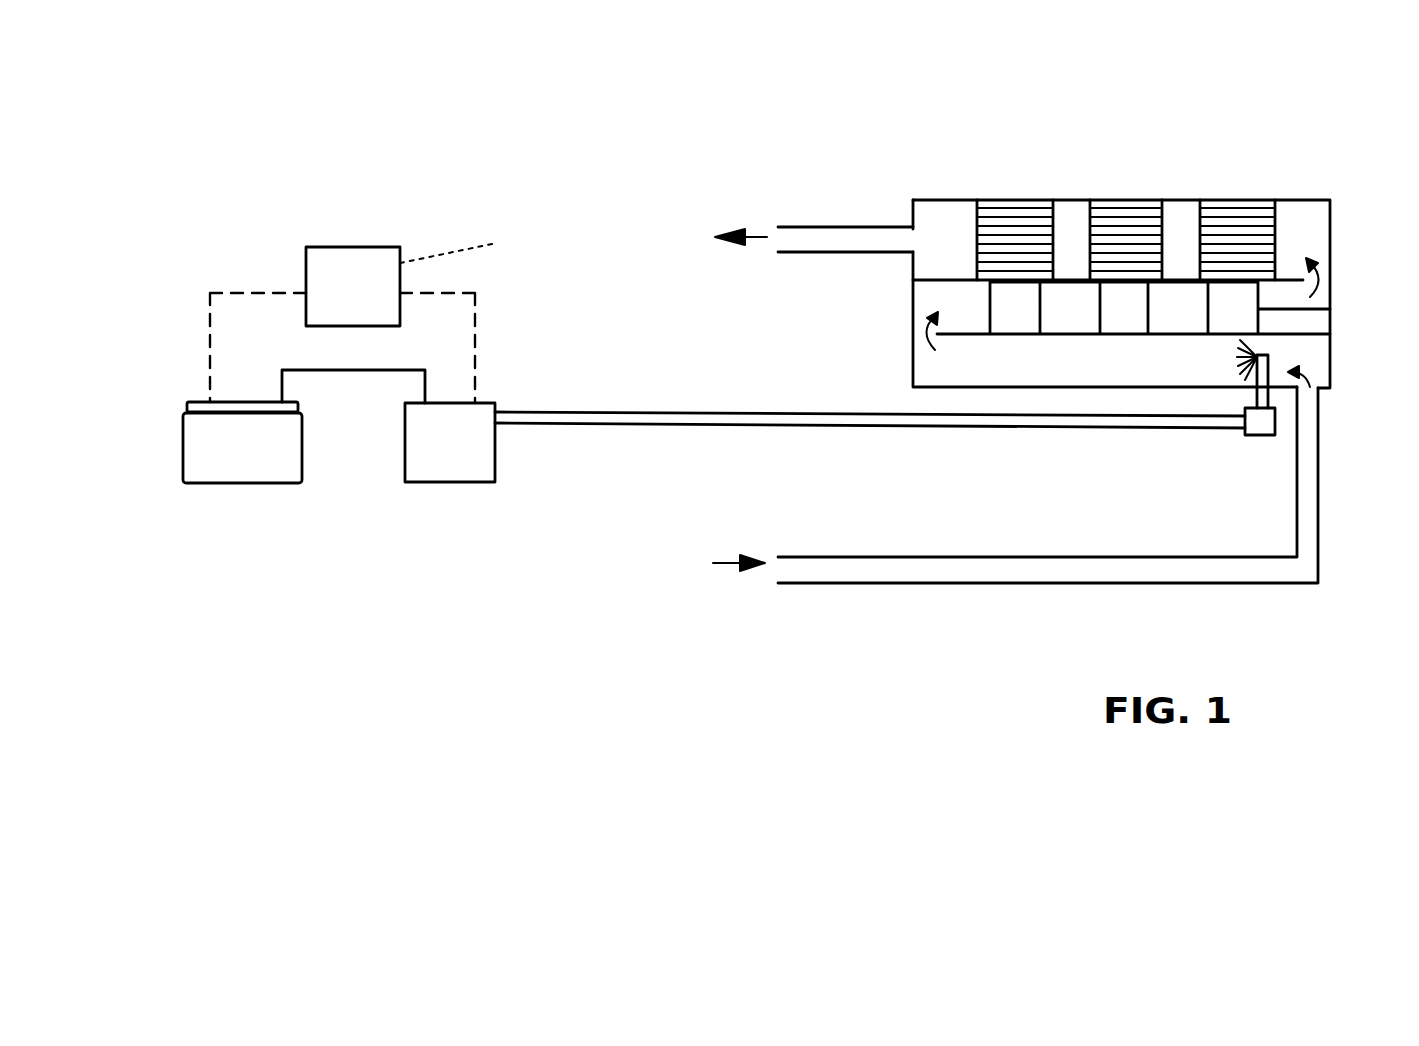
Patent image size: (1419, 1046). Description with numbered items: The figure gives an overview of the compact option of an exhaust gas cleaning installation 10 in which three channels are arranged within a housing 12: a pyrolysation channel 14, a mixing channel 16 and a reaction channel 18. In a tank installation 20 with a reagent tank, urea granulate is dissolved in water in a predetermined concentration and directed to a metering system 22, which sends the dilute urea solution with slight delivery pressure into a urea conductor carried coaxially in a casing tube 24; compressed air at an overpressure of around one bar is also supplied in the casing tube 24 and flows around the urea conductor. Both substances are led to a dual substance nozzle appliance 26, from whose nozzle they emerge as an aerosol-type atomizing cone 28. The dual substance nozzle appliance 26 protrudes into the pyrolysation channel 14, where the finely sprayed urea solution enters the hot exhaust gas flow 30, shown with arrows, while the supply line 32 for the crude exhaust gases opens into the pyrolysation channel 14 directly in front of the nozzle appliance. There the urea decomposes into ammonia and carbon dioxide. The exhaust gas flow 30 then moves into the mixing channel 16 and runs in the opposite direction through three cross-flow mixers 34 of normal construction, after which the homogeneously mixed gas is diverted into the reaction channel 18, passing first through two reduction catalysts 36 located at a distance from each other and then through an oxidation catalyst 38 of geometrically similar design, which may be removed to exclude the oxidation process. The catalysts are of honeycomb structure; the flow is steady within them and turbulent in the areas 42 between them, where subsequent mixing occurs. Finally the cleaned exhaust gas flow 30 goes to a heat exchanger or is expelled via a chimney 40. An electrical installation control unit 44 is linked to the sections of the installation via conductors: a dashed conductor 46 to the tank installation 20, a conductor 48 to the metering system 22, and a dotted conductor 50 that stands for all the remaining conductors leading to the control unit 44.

The exhaust gas cleaning installation 10 is at (232, 693).
The housing 12 is at (934, 200).
The pyrolysation channel 14 is at (925, 368).
The mixing channel 16 is at (925, 297).
The reaction channel 18 is at (1312, 225).
The tank installation 20 is at (229, 468).
The metering system 22 is at (443, 470).
The casing tube 24 is at (570, 428).
The dual substance nozzle appliance 26 is at (1265, 426).
The atomizing cone 28 is at (1257, 357).
The exhaust gas flow 30 is at (760, 237).
The supply line 32 is at (1318, 517).
The cross-flow mixers 34 is at (1260, 310).
The reduction catalysts 36 is at (1243, 200).
The oxidation catalyst 38 is at (1126, 200).
The chimney 40 is at (830, 227).
The areas between the catalysts 42 is at (1073, 200).
The electrical installation control unit 44 is at (350, 260).
The conductor 46 is at (210, 332).
The conductor 48 is at (475, 337).
The conductor 50 is at (450, 252).